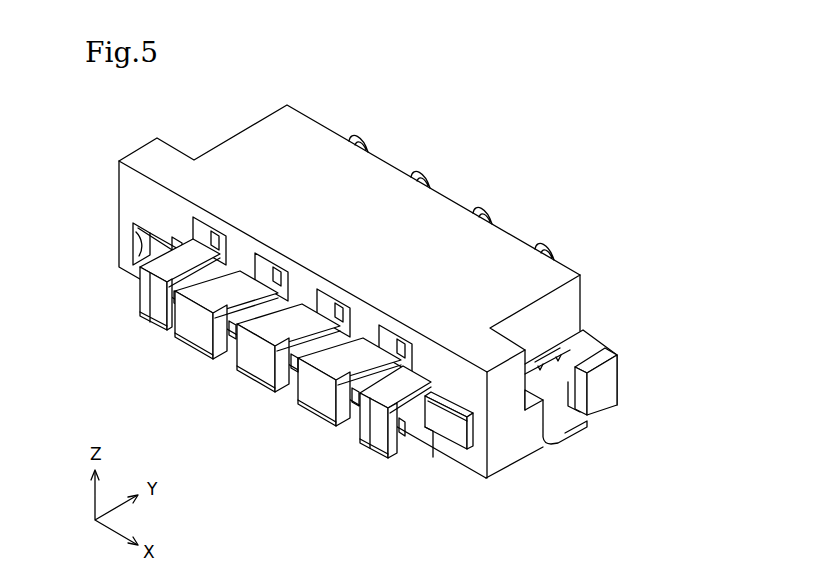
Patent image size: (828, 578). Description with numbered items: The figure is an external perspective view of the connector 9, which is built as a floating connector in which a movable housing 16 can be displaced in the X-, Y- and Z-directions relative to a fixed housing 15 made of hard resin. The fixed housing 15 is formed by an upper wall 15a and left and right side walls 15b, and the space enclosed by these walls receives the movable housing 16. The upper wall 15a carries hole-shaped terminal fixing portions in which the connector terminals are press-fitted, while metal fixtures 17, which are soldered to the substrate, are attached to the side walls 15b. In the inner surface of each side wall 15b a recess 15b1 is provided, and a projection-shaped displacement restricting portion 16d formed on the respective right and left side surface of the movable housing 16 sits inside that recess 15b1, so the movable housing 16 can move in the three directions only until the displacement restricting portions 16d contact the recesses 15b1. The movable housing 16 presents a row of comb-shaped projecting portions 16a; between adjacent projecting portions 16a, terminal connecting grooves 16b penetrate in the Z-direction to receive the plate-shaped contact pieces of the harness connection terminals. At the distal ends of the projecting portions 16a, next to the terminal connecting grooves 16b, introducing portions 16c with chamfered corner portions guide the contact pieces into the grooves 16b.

The connector 9 is at (458, 150).
The fixed housing 15 is at (507, 255).
The upper wall 15a is at (317, 137).
The side wall 15b is at (612, 392).
The recess 15b1 is at (142, 242).
The movable housing 16 is at (140, 298).
The comb-shaped projecting portion 16a is at (178, 262).
The terminal connecting groove 16b is at (175, 327).
The introducing portion 16c is at (153, 334).
The displacement restricting portion 16d is at (135, 262).
The metal fixture 17 is at (578, 432).